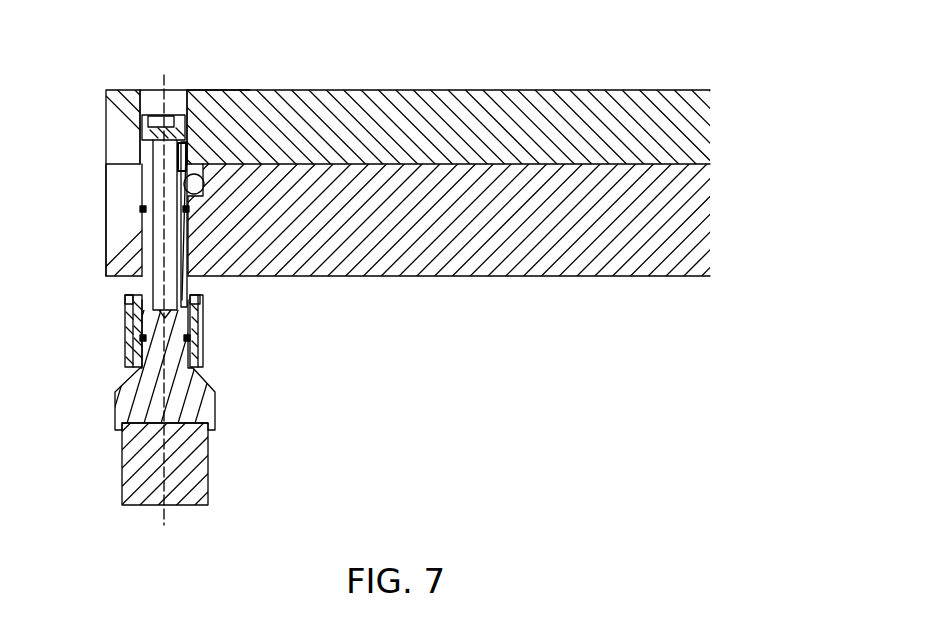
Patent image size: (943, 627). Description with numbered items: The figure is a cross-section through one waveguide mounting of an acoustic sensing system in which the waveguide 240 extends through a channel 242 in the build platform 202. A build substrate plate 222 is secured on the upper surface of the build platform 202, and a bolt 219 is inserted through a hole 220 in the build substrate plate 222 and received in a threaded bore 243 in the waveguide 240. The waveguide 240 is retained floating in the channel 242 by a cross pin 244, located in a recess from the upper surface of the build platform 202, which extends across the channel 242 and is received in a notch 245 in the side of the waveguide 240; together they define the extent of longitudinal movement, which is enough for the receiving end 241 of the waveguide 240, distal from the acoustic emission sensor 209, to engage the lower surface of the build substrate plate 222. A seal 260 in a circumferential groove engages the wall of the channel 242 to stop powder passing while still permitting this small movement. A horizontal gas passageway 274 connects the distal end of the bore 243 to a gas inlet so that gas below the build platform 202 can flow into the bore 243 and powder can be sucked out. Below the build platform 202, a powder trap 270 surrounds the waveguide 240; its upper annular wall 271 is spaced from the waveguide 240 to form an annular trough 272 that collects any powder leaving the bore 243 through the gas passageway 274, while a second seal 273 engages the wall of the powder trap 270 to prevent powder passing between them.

The build platform 202 is at (310, 276).
The acoustic emission sensor 209 is at (210, 492).
The bolt 219 is at (106, 90).
The hole 220 is at (140, 89).
The build substrate plate 222 is at (237, 90).
The waveguide 240 is at (215, 405).
The receiving end 241 is at (147, 165).
The channel 242 is at (193, 275).
The threaded bore 243 is at (106, 240).
The cross pin 244 is at (203, 178).
The notch 245 is at (187, 142).
The seal 260 is at (140, 209).
The powder trap 270 is at (203, 348).
The upper annular wall 271 is at (127, 302).
The annular trough 272 is at (140, 293).
The seal 273 is at (128, 345).
The gas passageway 274 is at (203, 318).